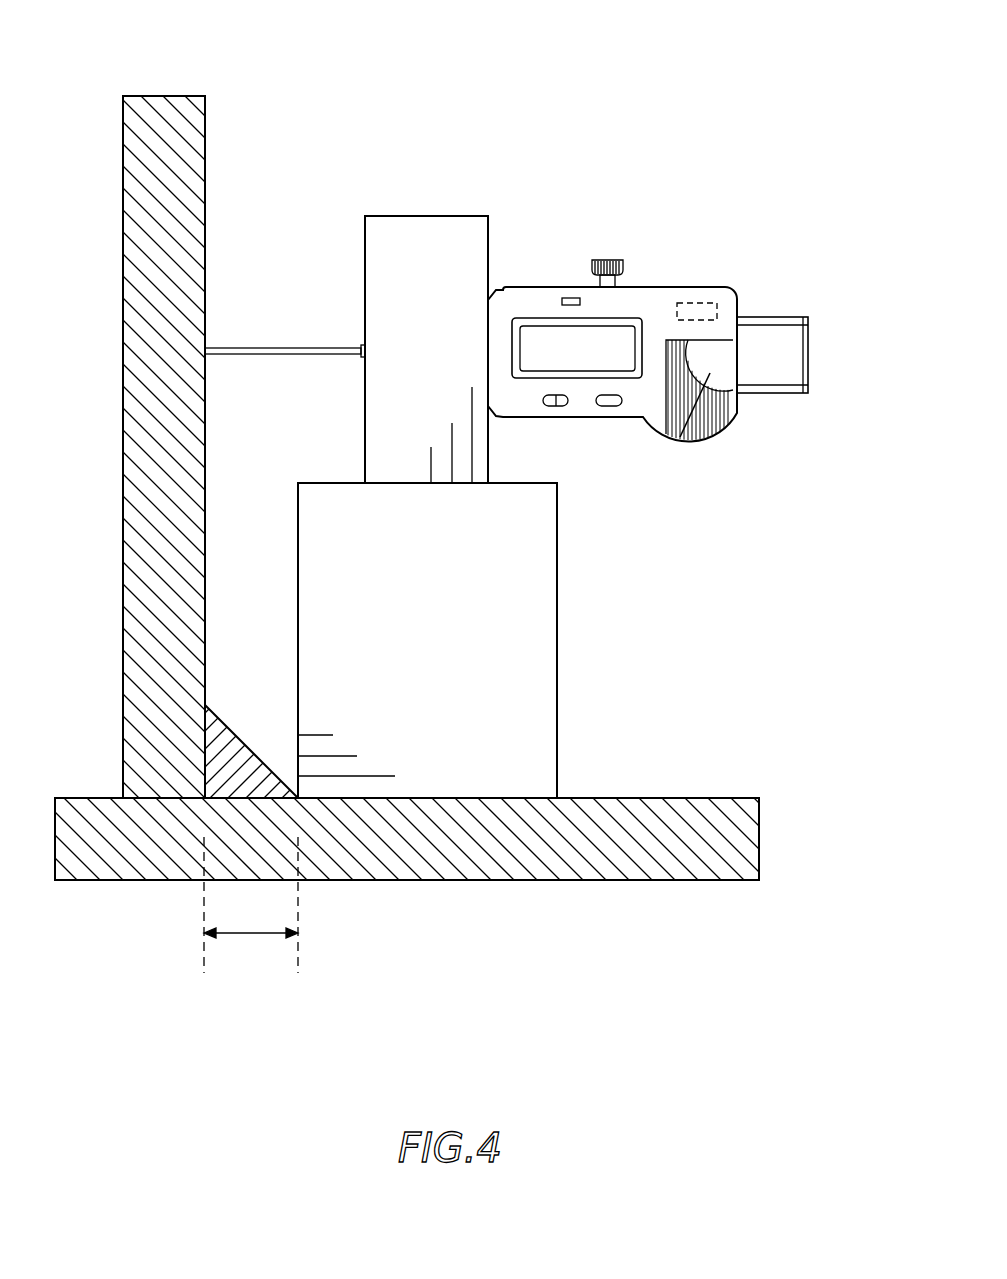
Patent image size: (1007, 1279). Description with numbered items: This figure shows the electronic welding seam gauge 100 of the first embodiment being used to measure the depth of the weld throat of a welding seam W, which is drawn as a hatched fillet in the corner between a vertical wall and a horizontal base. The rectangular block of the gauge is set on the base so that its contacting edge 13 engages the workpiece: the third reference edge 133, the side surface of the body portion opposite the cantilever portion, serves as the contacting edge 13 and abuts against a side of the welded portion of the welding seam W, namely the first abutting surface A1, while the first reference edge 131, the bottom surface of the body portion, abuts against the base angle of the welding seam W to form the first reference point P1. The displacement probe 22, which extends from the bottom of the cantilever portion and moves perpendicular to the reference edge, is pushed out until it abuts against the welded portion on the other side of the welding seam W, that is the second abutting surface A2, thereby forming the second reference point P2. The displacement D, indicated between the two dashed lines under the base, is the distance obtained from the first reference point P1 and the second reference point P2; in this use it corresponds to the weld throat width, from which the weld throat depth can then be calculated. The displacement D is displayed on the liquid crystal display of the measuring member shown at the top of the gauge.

The electronic welding seam gauge 100 is at (737, 112).
The contacting edge 13 is at (434, 723).
The first reference edge 131 is at (298, 629).
The third reference edge 133 is at (462, 798).
The displacement probe 22 is at (310, 353).
The first reference point P1 is at (298, 798).
The second reference point P2 is at (205, 348).
The first abutting surface A1 is at (663, 798).
The second abutting surface A2 is at (205, 422).
The welding seam W is at (204, 798).
The displacement D is at (253, 935).